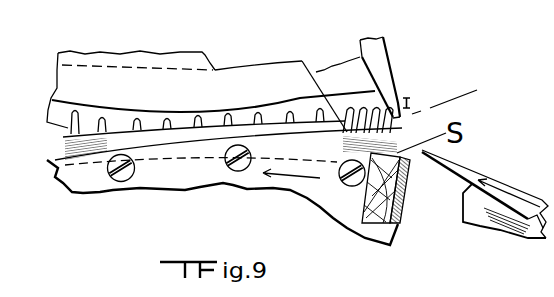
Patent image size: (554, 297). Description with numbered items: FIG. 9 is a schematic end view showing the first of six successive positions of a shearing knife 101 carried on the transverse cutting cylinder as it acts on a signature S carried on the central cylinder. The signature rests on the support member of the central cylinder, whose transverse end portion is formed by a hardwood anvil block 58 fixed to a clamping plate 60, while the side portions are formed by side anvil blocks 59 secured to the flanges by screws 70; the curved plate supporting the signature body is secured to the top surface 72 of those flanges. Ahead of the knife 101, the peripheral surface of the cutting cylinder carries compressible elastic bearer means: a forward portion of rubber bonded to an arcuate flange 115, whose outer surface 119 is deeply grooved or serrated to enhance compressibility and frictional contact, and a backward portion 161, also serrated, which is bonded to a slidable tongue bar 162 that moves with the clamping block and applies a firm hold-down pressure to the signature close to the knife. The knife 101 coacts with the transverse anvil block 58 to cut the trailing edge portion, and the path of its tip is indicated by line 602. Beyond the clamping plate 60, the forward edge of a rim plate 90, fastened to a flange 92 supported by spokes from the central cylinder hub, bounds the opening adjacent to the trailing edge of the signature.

The arcuate flange 115 is at (253, 80).
The slidable tongue bar 162 is at (343, 70).
The shearing knife 101 is at (390, 52).
The path of the knife tip 602 is at (455, 98).
The outer surface 119 is at (65, 126).
The backward portion of the elastic bearer means 161 is at (391, 131).
The top surface 72 is at (55, 172).
The side anvil block 59 is at (109, 177).
The screw 70 is at (226, 168).
The transverse anvil block 58 is at (362, 215).
The clamping plate 60 is at (401, 212).
The rim plate 90 is at (470, 176).
The flange 92 is at (480, 213).